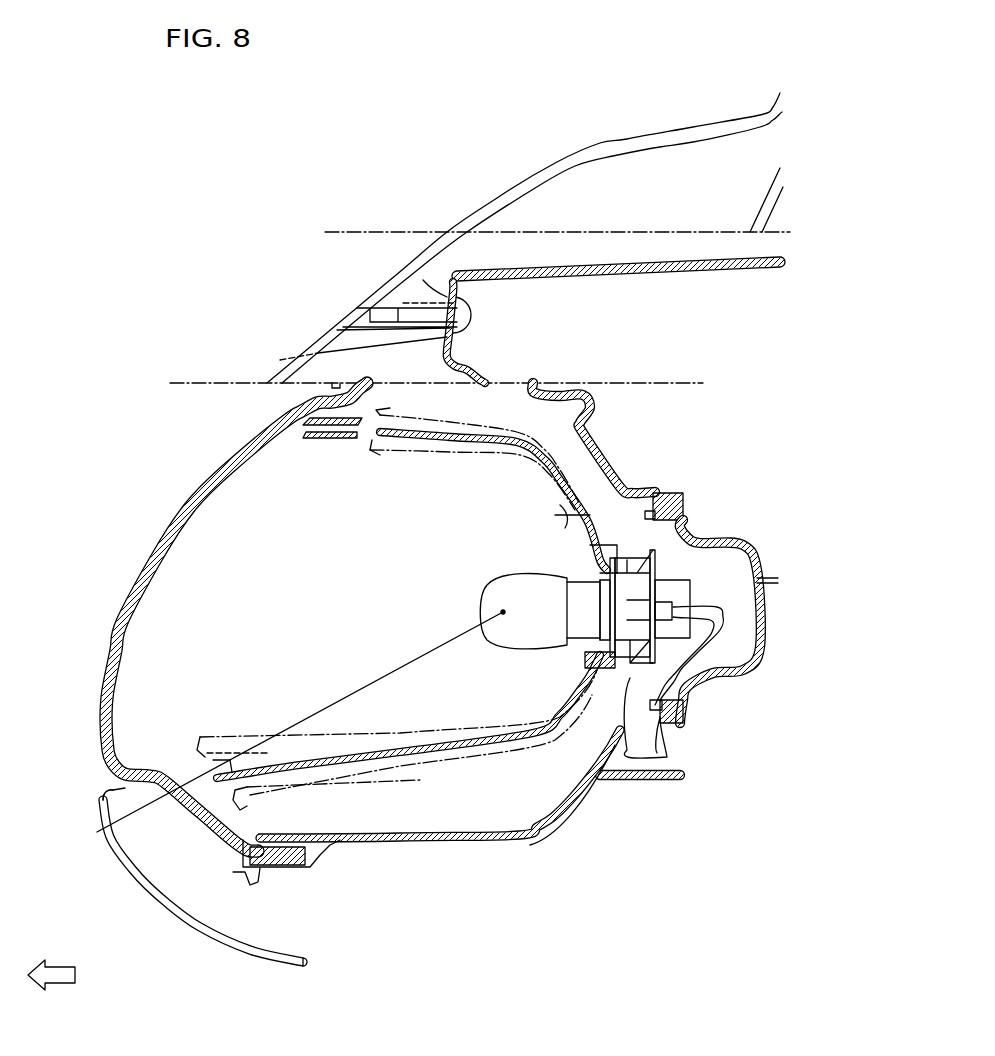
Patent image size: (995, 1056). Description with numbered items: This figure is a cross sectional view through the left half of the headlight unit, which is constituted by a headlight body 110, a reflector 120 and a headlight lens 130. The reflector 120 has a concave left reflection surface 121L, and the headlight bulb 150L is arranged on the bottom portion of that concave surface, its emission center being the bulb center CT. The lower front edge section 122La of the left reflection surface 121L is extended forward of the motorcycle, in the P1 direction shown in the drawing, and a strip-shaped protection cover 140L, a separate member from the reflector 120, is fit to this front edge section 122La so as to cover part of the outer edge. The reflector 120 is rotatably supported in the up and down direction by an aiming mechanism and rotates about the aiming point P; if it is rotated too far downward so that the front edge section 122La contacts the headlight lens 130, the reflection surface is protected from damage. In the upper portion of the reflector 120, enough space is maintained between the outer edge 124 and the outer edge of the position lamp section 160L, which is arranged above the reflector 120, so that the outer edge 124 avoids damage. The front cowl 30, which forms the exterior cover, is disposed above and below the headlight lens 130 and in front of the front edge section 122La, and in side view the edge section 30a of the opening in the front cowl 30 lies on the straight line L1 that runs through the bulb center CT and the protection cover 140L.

The front cowl 30 is at (307, 345).
The edge section of the opening section 30a is at (110, 790).
The headlight lens 130 is at (150, 553).
The position lamp section 160L is at (307, 440).
The outer edge 124 is at (420, 445).
The reflector 120 is at (580, 492).
The aiming point P is at (580, 497).
The headlight body 110 is at (587, 790).
The headlight bulb 150L is at (492, 638).
The bulb center CT is at (503, 612).
The straight line L1 is at (310, 717).
The protection cover 140L is at (215, 778).
The left reflection surface 121L is at (330, 763).
The front edge section 122La is at (260, 773).
The P1 direction P1 is at (60, 965).